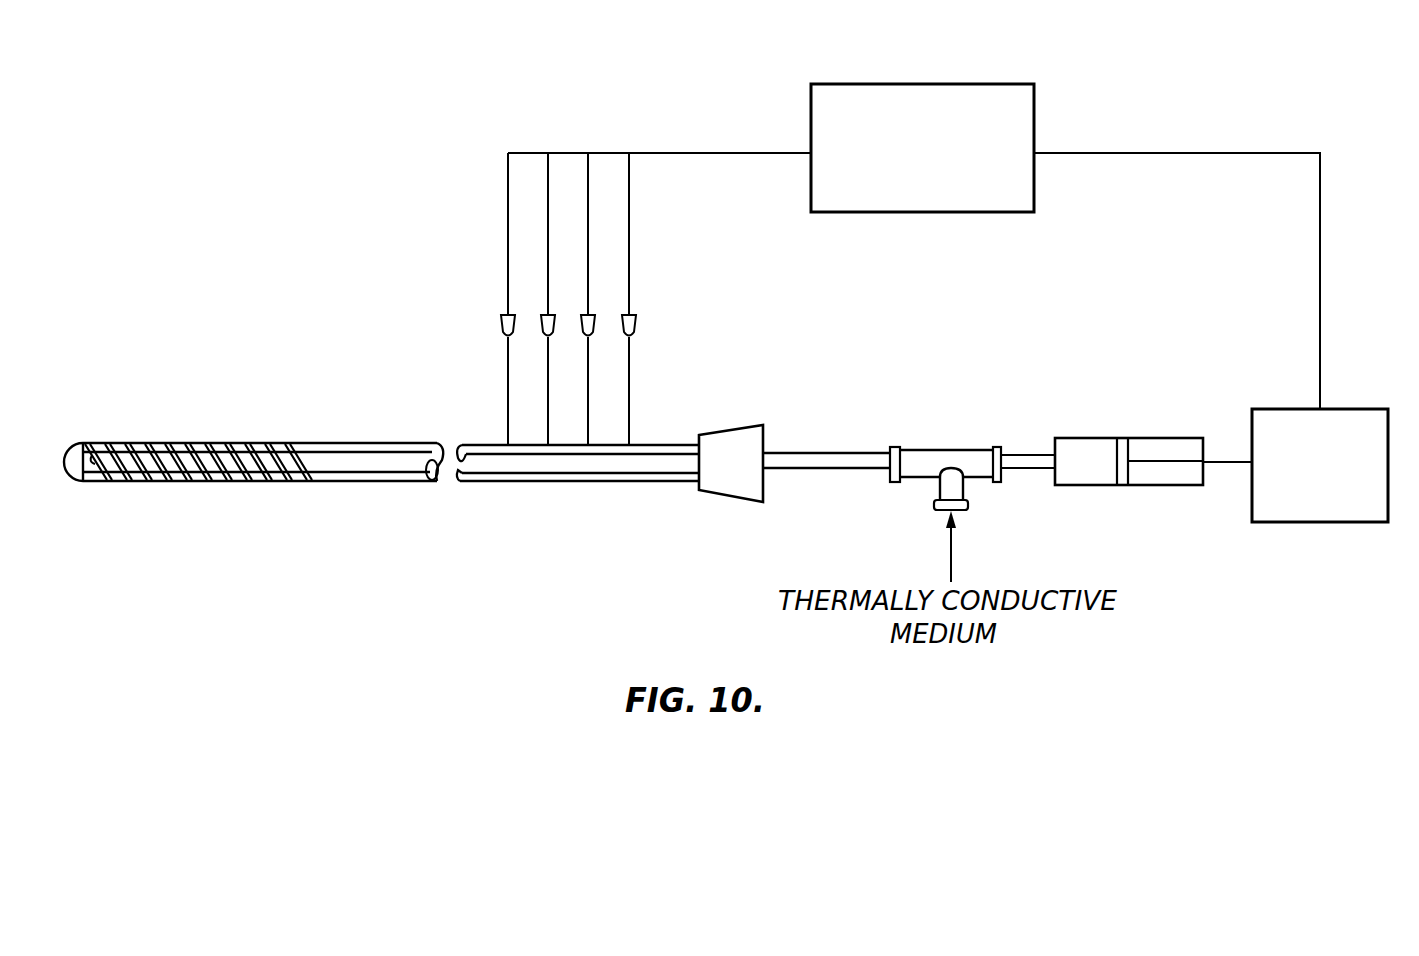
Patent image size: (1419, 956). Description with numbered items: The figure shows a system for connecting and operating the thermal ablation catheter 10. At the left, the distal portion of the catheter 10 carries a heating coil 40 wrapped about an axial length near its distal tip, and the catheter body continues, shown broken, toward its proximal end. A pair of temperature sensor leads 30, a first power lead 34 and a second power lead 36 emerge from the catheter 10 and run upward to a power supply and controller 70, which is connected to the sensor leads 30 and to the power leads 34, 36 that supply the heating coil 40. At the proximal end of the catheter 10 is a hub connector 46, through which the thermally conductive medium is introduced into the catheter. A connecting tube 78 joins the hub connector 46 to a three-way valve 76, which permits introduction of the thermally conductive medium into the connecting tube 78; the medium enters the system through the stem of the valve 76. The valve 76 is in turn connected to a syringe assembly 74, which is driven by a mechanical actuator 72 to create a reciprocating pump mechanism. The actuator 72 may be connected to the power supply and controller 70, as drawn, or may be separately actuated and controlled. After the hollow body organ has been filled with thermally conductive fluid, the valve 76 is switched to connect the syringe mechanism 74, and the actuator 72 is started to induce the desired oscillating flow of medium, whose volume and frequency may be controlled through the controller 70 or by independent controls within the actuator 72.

The catheter 10 is at (334, 368).
The temperature sensor leads 30 is at (545, 369).
The first power lead 34 is at (588, 376).
The second power lead 36 is at (629, 398).
The heating coil 40 is at (192, 482).
The hub connector 46 is at (736, 500).
The power supply and controller 70 is at (1003, 84).
The mechanical actuator 72 is at (1355, 409).
The syringe assembly 74 is at (1088, 438).
The three-way valve 76 is at (918, 450).
The connecting tube 78 is at (822, 452).